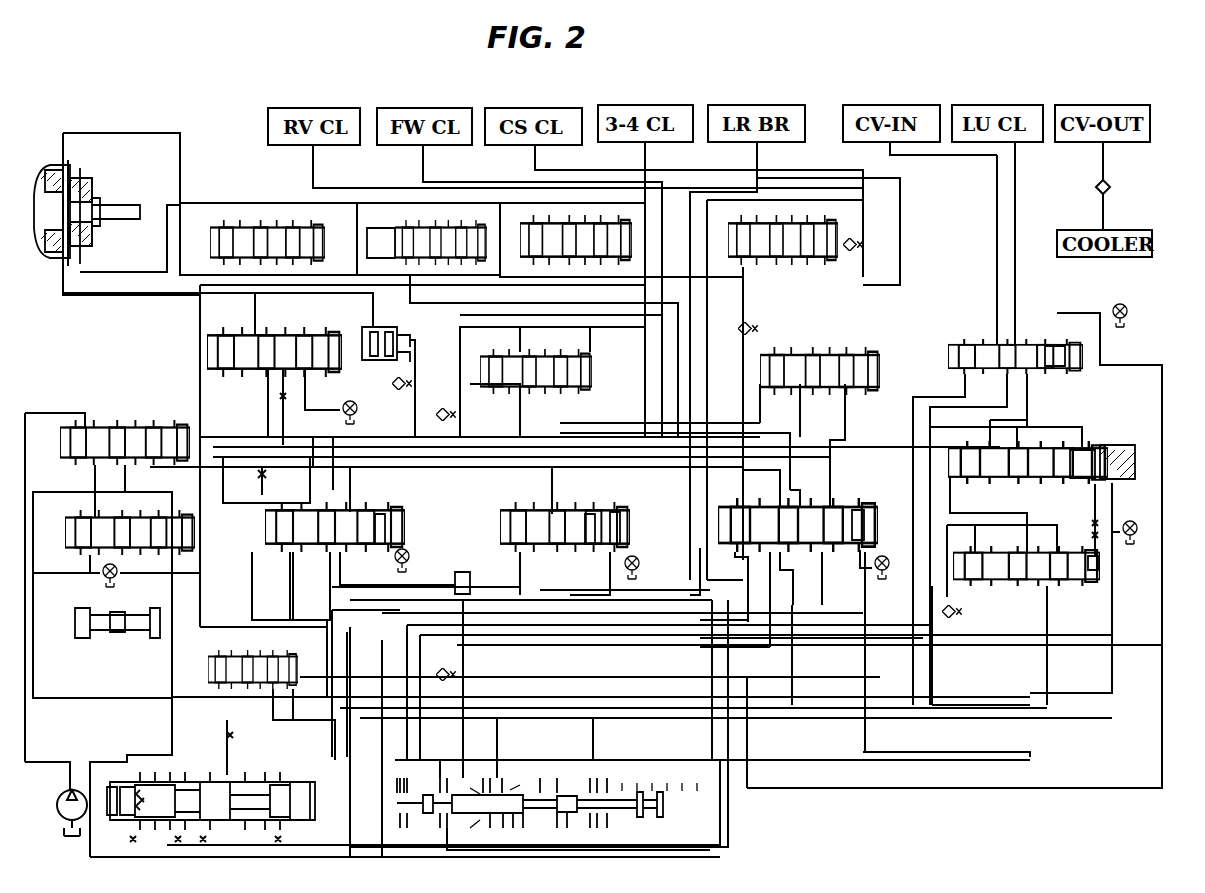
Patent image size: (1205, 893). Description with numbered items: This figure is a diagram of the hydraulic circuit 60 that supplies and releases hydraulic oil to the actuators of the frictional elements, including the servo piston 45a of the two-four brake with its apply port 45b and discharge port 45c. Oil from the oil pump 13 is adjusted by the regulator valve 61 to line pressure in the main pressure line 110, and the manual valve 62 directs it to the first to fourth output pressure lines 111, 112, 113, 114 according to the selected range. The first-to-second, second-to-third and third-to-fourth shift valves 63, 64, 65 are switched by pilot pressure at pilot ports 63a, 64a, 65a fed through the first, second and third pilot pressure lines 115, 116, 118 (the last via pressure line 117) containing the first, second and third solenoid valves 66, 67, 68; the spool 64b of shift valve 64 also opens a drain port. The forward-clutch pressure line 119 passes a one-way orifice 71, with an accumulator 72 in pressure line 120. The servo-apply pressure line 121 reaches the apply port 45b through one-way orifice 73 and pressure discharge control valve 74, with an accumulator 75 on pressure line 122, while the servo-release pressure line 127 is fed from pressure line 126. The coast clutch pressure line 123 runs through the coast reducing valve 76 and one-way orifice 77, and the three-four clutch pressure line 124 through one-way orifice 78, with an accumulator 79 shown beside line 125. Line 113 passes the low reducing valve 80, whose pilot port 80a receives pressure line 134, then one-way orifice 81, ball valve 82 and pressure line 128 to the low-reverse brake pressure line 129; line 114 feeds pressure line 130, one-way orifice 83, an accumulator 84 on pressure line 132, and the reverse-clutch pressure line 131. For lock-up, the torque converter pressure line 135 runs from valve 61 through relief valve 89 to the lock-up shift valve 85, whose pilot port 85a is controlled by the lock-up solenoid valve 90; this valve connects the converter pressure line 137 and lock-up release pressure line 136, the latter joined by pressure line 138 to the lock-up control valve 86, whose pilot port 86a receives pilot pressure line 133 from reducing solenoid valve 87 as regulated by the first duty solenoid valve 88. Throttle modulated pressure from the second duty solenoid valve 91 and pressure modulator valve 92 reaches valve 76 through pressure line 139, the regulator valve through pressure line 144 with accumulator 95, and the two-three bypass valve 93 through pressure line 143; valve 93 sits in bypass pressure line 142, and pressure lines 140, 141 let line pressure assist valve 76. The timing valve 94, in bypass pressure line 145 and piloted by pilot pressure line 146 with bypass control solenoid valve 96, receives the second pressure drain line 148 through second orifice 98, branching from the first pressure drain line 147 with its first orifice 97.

The oil pump 13 is at (56, 798).
The hydraulic circuit 60 is at (46, 153).
The servo piston 45a is at (118, 191).
The apply port 45b is at (65, 258).
The discharge port 45c is at (85, 260).
The regulator valve 61 is at (207, 760).
The manual valve 62 is at (666, 815).
The first-to-second (1-2) shift valve 63 is at (404, 515).
The pilot port 63a is at (380, 518).
The second-to-third (2-3) shift valve 64 is at (497, 526).
The pilot port 64a is at (614, 517).
The spool 64b is at (592, 512).
The third-to-fourth (3-4) shift valve 65 is at (872, 504).
The pilot port 65a is at (862, 510).
The first solenoid valve 66 is at (412, 555).
The second solenoid valve 67 is at (626, 555).
The third solenoid valve 68 is at (879, 558).
The one-way orifice 71 is at (760, 328).
The accumulator 72 is at (810, 225).
The one-way orifice 73 is at (412, 377).
The pressure discharge control valve 74 is at (357, 323).
The accumulator 75 is at (310, 243).
The coast reducing valve 76 is at (875, 356).
The one-way orifice 77 is at (860, 238).
The one-way orifice 78 is at (443, 413).
The accumulator 79 is at (610, 234).
The low reducing valve 80 is at (1017, 594).
The pilot port 80a is at (1095, 580).
The one-way orifice 81 is at (953, 620).
The ball valve 82 is at (472, 580).
The one-way orifice 83 is at (450, 666).
The accumulator 84 is at (458, 234).
The lock-up shift valve 85 is at (967, 314).
The pilot port 85a is at (1047, 332).
The lock-up control valve 86 is at (1126, 425).
The pilot port 86a is at (1108, 445).
The reducing solenoid valve 87 is at (144, 419).
The first duty solenoid valve 88 is at (1129, 517).
The relief valve 89 is at (300, 672).
The lock-up solenoid valve 90 is at (1117, 312).
The second duty solenoid valve 91 is at (114, 578).
The pressure modulator valve 92 is at (72, 518).
The 2-3 bypass valve 93 is at (600, 363).
The timing valve 94 is at (237, 328).
The accumulator 95 is at (112, 637).
The bypass control solenoid valve 96 is at (356, 405).
The first orifice 97 is at (276, 470).
The second orifice 98 is at (286, 394).
The main pressure line 110 is at (66, 760).
The first output pressure line 111 is at (830, 598).
The second output pressure line 112 is at (729, 816).
The third output pressure line 113 is at (1046, 634).
The fourth output pressure line 114 is at (440, 760).
The first pilot pressure line 115 is at (378, 652).
The second pilot pressure line 116 is at (612, 552).
The pilot pressure line 117 is at (895, 788).
The third pilot pressure line 118 is at (867, 598).
The forward-clutch pressure line 119 is at (419, 197).
The pressure line 120 is at (747, 282).
The servo-apply pressure line 121 is at (117, 298).
The pressure line 122 is at (180, 160).
The coast clutch pressure line 123 is at (527, 172).
The 3-4 clutch pressure line 124 is at (642, 173).
The oil passage 125 is at (560, 290).
The pressure line 126 is at (786, 468).
The servo-release pressure line 127 is at (244, 202).
The pressure line 128 is at (422, 587).
The low-reverse brake pressure line 129 is at (760, 171).
The pressure line 130 is at (426, 760).
The reverse-clutch pressure line 131 is at (315, 185).
The pressure line 132 is at (410, 276).
The pilot pressure line 133 is at (1110, 636).
The pressure line 134 is at (1095, 520).
The torque converter pressure line 135 is at (932, 668).
The lock-up release pressure line 136 is at (1017, 178).
The converter pressure line 137 is at (997, 190).
The pressure line 138 is at (1028, 398).
The pressure line 139 is at (758, 413).
The pressure line 140 is at (800, 405).
The pressure line 141 is at (562, 585).
The bypass pressure line 142 is at (520, 335).
The pressure line 143 is at (476, 404).
The pressure line 144 is at (172, 665).
The bypass pressure line 145 is at (258, 306).
The pilot pressure line 146 is at (318, 393).
The first pressure drain line 147 is at (471, 468).
The second pressure drain line 148 is at (280, 460).